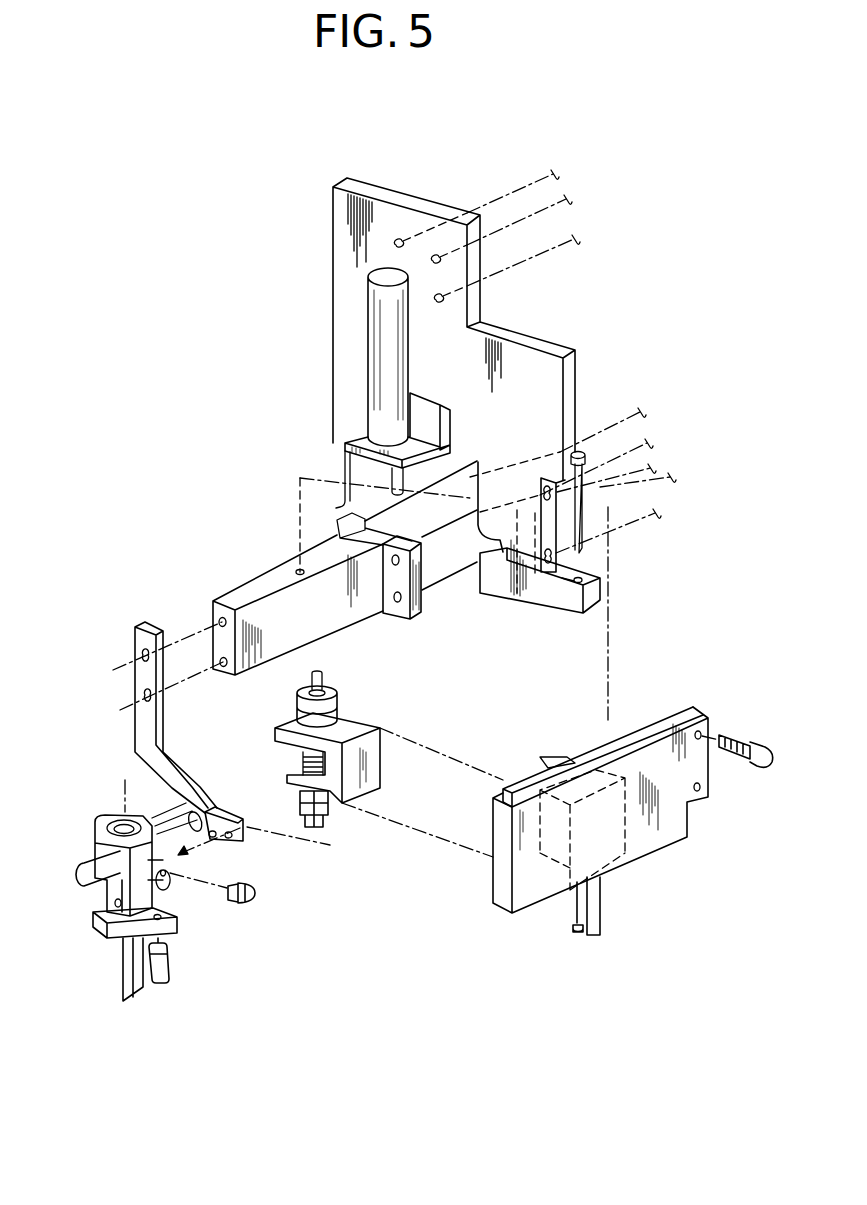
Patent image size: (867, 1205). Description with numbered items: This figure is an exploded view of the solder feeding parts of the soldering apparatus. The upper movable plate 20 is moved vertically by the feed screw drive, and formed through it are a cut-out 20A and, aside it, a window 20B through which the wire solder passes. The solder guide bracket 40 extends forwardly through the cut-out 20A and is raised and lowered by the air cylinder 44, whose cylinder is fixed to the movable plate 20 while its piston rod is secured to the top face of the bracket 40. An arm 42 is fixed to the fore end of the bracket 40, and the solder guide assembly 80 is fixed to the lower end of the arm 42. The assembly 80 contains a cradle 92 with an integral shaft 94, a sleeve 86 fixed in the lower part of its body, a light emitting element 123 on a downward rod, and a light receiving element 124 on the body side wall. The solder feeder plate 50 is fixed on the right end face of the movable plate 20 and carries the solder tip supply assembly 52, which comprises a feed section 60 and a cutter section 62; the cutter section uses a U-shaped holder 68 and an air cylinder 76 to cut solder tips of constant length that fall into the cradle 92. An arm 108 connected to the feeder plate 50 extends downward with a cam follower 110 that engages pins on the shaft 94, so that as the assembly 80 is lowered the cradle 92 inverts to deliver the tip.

The movable plate 20 is at (372, 181).
The cut-out 20A is at (477, 478).
The window 20B is at (487, 574).
The air cylinder 44 is at (368, 357).
The solder guide bracket 40 is at (250, 580).
The arm 42 is at (133, 736).
The solder guide assembly 80 is at (87, 843).
The cradle 92 is at (106, 814).
The shaft 94 is at (84, 886).
The sleeve 86 is at (122, 978).
The light emitting element 123 is at (167, 977).
The light receiving element 124 is at (255, 897).
The air cylinder 76 is at (338, 704).
The holder 68 is at (381, 734).
The cutter section 62 is at (342, 818).
The feed section 60 is at (546, 762).
The solder feeder plate 50 is at (688, 812).
The solder tip supply assembly 52 is at (532, 876).
The arm 108 is at (601, 896).
The cam follower 110 is at (578, 934).